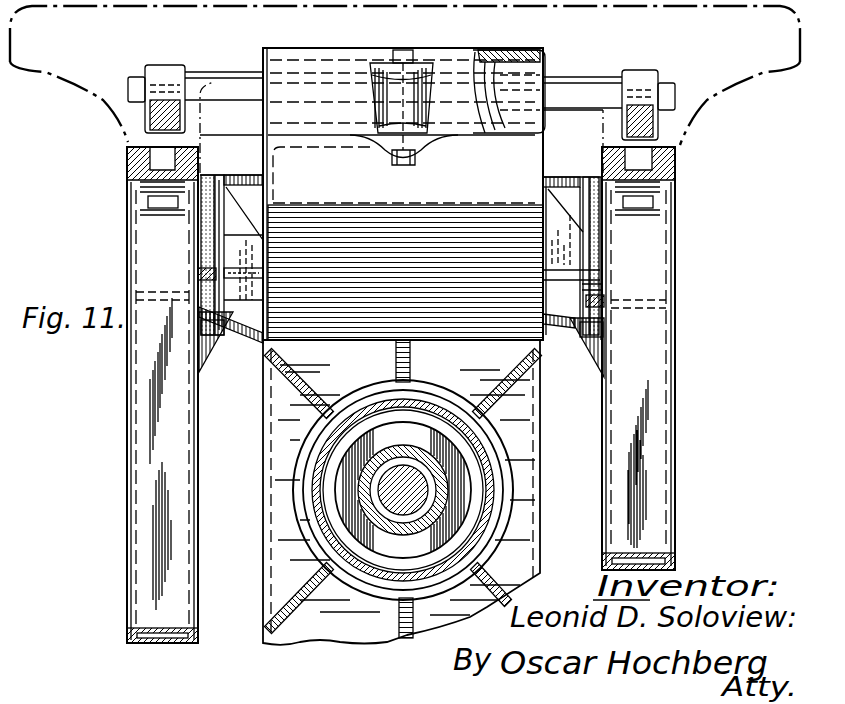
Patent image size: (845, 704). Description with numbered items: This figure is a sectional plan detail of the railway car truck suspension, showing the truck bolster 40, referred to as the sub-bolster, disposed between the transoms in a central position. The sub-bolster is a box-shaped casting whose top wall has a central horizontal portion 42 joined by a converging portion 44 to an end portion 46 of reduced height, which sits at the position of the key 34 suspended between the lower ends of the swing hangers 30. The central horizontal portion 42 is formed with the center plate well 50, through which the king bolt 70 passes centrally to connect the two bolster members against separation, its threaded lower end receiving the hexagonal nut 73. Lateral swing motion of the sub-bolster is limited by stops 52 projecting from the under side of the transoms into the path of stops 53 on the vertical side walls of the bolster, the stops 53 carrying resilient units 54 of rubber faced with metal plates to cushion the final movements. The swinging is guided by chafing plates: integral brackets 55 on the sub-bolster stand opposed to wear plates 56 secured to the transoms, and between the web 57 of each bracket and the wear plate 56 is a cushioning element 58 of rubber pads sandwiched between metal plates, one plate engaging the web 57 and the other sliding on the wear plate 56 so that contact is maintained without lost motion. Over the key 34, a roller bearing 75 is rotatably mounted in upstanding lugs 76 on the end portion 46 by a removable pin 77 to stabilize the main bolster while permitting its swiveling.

The swing hanger 30 is at (160, 66).
The key 34 is at (212, 72).
The truck bolster 40 is at (264, 410).
The central horizontal portion of top wall 42 is at (271, 450).
The converging portion 44 is at (546, 148).
The end portion 46 is at (312, 42).
The center plate well 50 is at (363, 373).
The stop 52 is at (185, 302).
The stop 53 is at (198, 275).
The resilient unit 54 is at (590, 285).
The bracket 55 is at (236, 323).
The wear plate 56 is at (206, 176).
The web 57 is at (221, 186).
The cushioning element 58 is at (210, 178).
The king bolt 70 is at (417, 468).
The hexagonal nut 73 is at (127, 452).
The roller bearing 75 is at (412, 110).
The upstanding lug 76 is at (391, 55).
The pin 77 is at (403, 168).